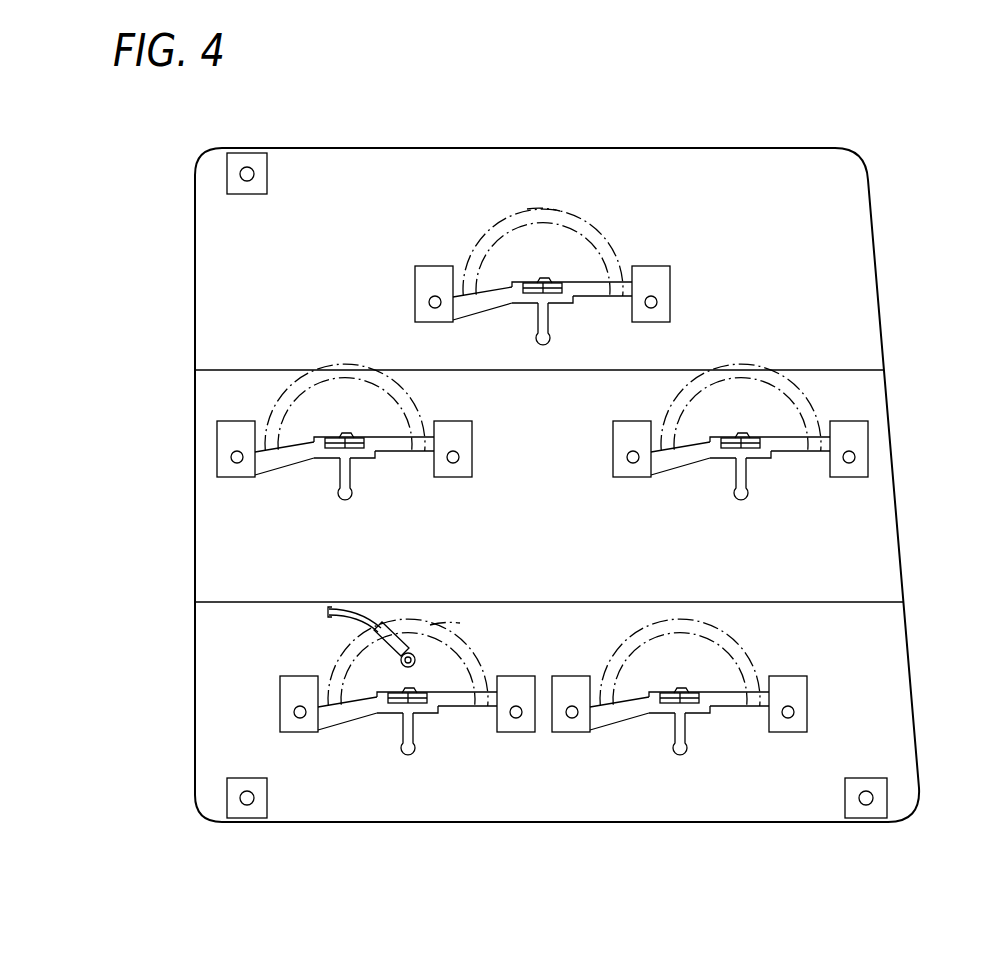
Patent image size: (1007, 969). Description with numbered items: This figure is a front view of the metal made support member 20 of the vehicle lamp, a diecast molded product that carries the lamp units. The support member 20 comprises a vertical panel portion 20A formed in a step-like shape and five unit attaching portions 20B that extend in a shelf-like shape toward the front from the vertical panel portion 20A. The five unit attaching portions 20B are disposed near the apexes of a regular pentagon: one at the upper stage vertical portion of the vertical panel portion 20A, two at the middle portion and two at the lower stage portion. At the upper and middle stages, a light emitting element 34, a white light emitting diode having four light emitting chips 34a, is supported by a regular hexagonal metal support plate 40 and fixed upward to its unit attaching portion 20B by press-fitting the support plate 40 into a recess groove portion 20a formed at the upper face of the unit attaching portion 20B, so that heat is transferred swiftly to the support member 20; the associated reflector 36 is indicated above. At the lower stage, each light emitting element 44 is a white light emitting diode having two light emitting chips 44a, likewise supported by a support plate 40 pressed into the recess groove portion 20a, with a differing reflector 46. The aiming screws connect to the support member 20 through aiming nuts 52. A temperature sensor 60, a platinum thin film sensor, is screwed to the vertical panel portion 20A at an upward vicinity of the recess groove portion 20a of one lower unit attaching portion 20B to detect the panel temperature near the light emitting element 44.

The metal made support member 20 is at (903, 175).
The vertical panel portion 20A is at (865, 540).
The unit attaching portion 20B is at (662, 278).
The recess groove portion 20a is at (556, 304).
The light emitting element 34 is at (563, 266).
The light emitting chip 34a is at (543, 281).
The reflector 36 is at (530, 210).
The support plate 40 is at (525, 304).
The light emitting element 44 is at (430, 675).
The light emitting chip 44a is at (408, 693).
The reflector 46 is at (443, 591).
The aiming nut 52 is at (230, 173).
The temperature sensor 60 is at (392, 627).